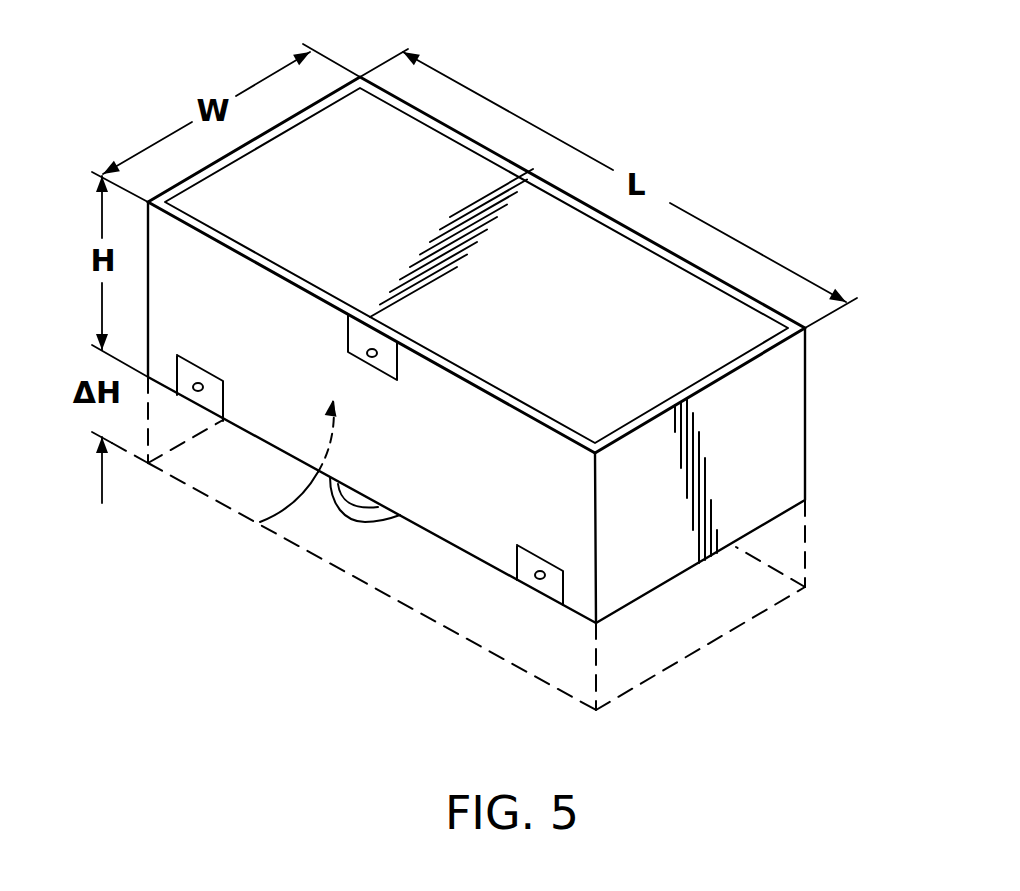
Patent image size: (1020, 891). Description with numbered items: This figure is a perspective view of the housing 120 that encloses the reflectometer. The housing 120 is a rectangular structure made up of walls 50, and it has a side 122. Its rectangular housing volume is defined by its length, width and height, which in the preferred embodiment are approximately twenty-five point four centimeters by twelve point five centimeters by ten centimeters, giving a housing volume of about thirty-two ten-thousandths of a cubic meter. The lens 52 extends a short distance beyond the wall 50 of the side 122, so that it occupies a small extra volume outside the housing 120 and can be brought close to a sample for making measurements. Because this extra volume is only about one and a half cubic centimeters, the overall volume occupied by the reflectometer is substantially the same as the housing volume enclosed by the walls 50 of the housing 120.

The housing 120 is at (250, 67).
The walls 50 is at (193, 197).
The lens 52 is at (368, 512).
The side 122 is at (260, 522).